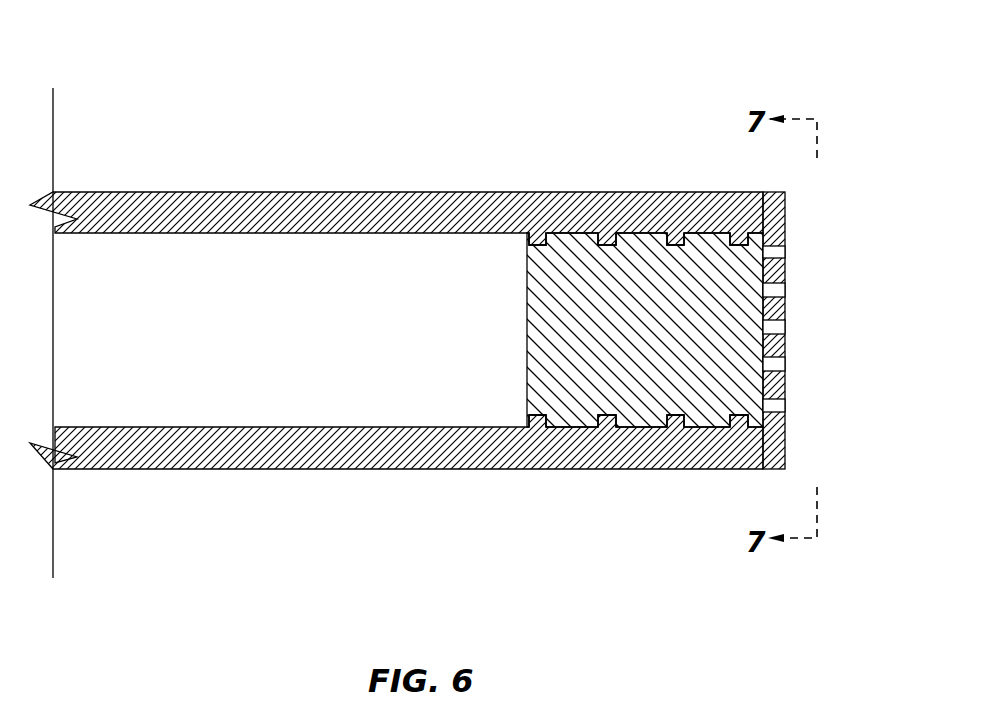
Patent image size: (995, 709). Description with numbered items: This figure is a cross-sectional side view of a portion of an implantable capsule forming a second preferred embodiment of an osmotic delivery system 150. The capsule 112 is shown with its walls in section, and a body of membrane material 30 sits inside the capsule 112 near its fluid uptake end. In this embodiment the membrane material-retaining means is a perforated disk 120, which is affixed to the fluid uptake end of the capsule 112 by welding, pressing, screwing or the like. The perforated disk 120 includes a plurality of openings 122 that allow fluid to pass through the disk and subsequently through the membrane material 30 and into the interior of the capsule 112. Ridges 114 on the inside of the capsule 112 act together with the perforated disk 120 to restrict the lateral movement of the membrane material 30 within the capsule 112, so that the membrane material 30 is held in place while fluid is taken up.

The osmotic delivery system 150 is at (249, 140).
The capsule 112 is at (230, 470).
The ridges 114 is at (609, 240).
The membrane material 30 is at (527, 342).
The perforated disk 120 is at (786, 215).
The openings 122 is at (773, 330).